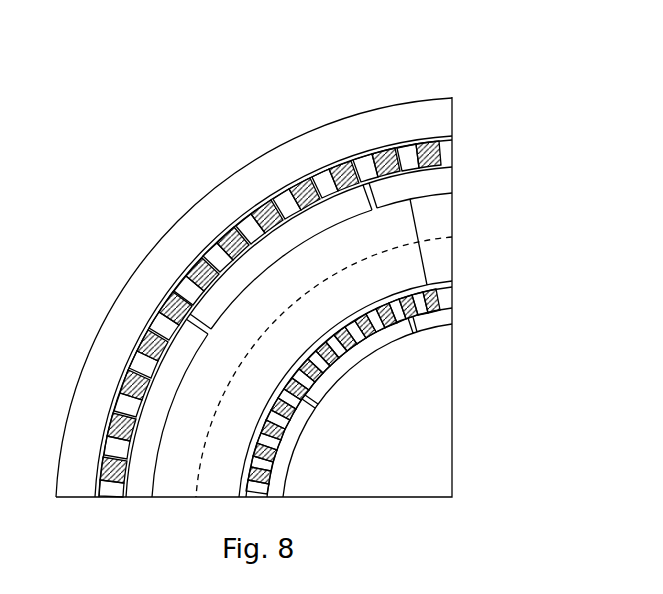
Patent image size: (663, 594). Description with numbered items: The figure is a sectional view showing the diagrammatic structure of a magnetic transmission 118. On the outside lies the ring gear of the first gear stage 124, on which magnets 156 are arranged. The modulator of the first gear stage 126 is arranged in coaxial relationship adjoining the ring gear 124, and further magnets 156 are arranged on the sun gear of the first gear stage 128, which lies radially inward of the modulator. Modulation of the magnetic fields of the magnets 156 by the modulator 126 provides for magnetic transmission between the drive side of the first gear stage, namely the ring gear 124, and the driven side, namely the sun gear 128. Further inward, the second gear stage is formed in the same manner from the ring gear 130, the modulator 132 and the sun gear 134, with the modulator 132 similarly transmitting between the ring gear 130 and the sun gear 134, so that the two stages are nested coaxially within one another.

The magnetic transmission 118 is at (130, 141).
The ring gear of the first gear stage 124 is at (437, 118).
The modulator of the first gear stage 126 is at (440, 149).
The sun gear of the first gear stage 128 is at (425, 212).
The ring gear of the second gear stage 130 is at (440, 251).
The modulator of the second gear stage 132 is at (437, 293).
The sun gear of the second gear stage 134 is at (420, 368).
The magnets 156 is at (384, 146).